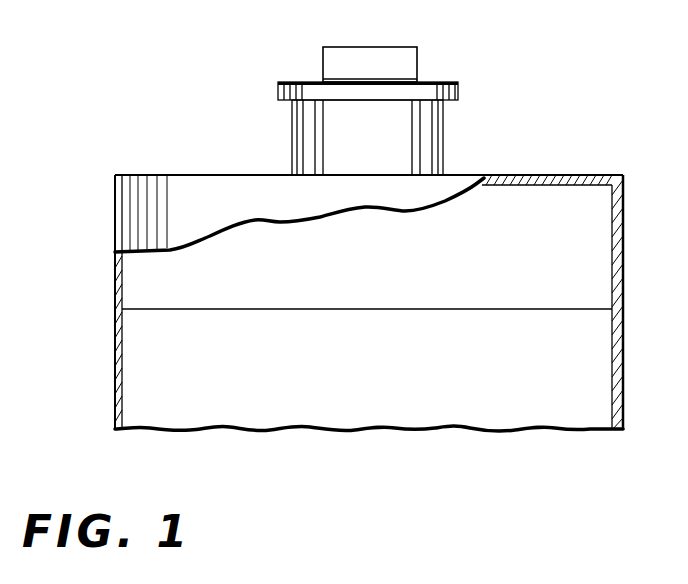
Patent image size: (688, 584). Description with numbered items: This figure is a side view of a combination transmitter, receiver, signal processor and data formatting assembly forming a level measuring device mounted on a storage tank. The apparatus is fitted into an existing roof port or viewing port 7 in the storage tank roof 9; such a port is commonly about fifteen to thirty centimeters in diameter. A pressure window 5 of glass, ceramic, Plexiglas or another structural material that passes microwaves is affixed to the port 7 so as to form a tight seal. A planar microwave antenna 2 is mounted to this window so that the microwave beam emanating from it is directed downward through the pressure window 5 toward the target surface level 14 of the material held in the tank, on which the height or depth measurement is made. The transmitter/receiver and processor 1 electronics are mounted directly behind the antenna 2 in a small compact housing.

The transmitter/receiver and processor 1 is at (323, 60).
The planar microwave antenna 2 is at (440, 82).
The pressure window 5 is at (278, 92).
The viewing port 7 is at (443, 139).
The storage tank roof 9 is at (577, 174).
The target surface level 14 is at (517, 308).